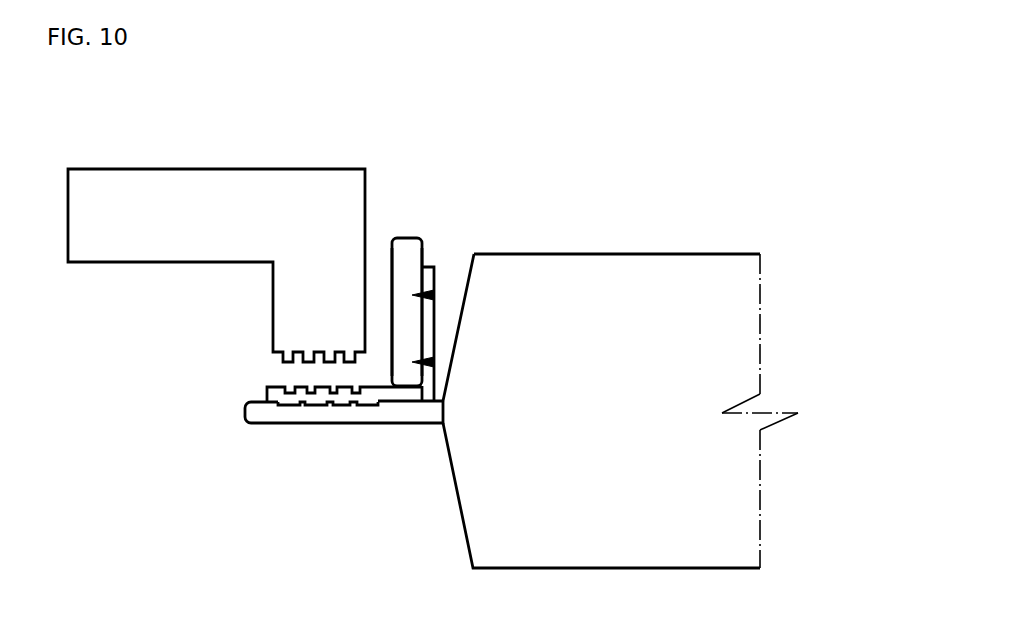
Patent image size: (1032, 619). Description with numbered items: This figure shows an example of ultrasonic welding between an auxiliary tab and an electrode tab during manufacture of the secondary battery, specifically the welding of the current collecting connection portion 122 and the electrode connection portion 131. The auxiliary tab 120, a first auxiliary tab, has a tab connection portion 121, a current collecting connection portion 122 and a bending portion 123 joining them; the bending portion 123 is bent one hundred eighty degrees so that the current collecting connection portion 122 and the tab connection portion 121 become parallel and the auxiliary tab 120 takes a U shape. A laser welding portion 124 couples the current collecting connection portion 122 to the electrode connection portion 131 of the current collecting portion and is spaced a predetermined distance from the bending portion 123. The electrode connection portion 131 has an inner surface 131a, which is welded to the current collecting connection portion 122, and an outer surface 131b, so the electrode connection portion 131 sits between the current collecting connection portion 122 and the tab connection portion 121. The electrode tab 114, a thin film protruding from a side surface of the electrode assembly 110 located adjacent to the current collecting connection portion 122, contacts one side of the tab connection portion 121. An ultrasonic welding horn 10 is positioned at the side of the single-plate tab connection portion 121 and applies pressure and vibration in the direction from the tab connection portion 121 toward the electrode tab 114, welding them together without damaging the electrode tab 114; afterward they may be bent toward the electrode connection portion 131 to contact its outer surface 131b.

The ultrasonic welding horn 10 is at (161, 174).
The electrode assembly 110 is at (612, 262).
The electrode tab 114 is at (263, 413).
The auxiliary tab 120 is at (364, 398).
The tab connection portion 121 is at (328, 442).
The current collecting connection portion 122 is at (437, 333).
The bending portion 123 is at (428, 393).
The laser welding portion 124 is at (434, 295).
The electrode connection portion 131 is at (408, 243).
The inner surface 131a is at (424, 257).
The outer surface 131b is at (392, 263).